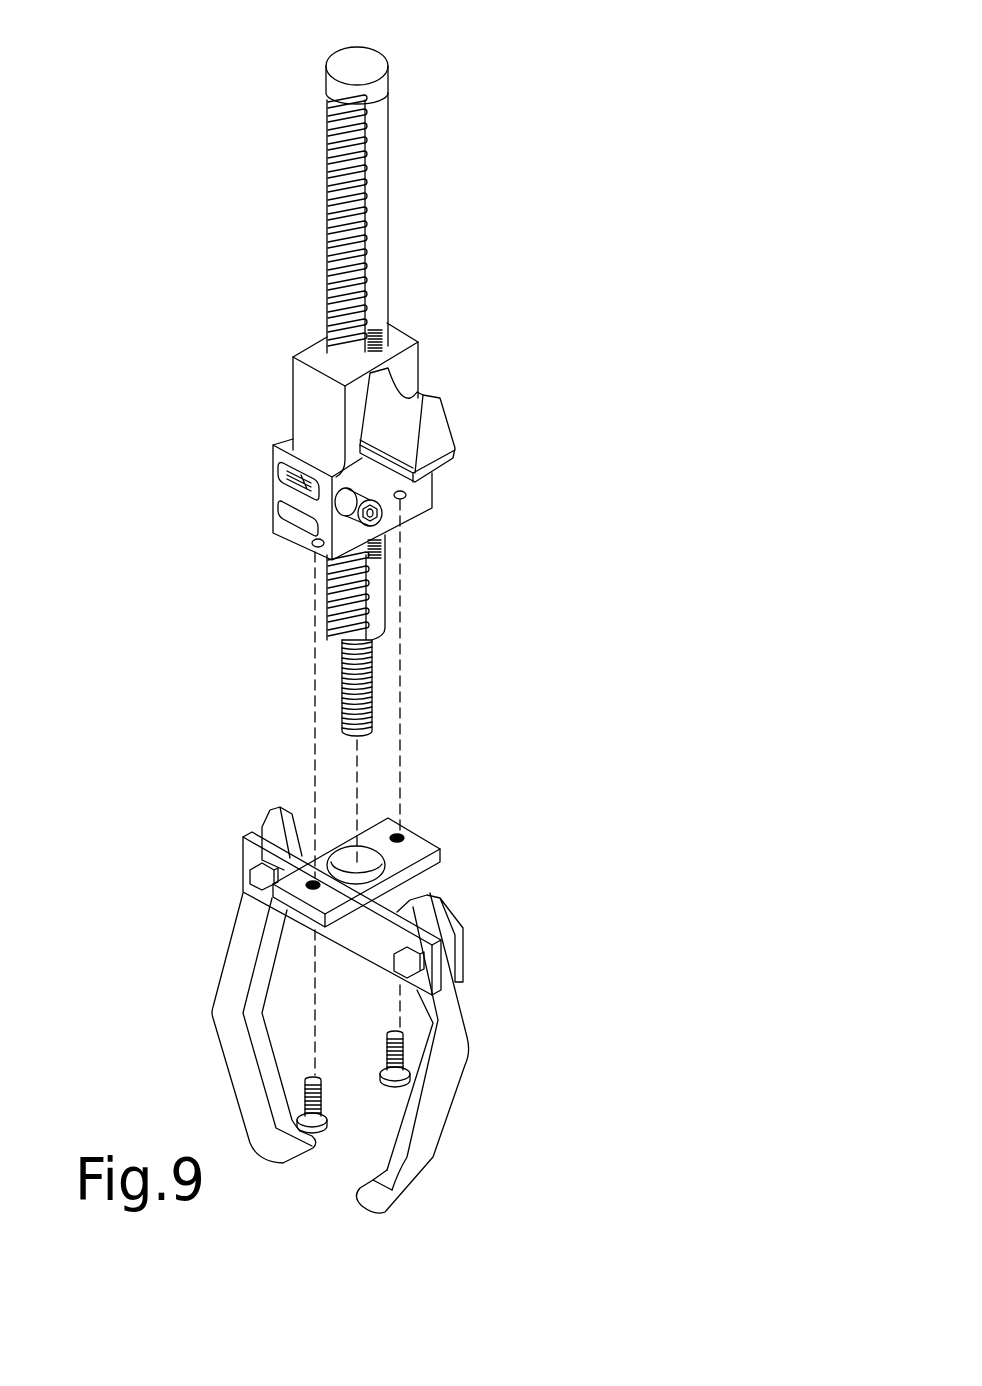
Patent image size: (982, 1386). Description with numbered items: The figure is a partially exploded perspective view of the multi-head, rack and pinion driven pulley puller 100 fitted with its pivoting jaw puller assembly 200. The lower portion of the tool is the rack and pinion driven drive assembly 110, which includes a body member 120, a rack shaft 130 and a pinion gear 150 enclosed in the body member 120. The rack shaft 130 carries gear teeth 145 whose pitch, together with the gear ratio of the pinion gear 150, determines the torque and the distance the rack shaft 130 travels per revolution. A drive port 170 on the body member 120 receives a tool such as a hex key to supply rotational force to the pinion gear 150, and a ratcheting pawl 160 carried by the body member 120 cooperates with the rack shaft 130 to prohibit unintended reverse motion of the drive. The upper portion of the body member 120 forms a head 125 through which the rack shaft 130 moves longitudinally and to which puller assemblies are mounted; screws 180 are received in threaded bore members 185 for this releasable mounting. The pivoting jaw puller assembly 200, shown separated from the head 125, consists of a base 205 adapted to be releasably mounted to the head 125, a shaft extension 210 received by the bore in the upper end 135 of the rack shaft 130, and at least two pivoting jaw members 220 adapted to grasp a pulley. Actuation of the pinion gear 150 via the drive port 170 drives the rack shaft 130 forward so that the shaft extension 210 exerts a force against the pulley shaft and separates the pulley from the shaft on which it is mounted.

The multi-head rack and pinion driven pulley puller 100 is at (606, 179).
The drive assembly 110 is at (300, 353).
The body member 120 is at (302, 430).
The head 125 is at (276, 532).
The rack shaft 130 is at (368, 98).
The upper end 135 is at (330, 598).
The gear teeth 145 is at (336, 166).
The pinion gear 150 is at (292, 477).
The ratcheting pawl 160 is at (405, 495).
The drive port 170 is at (378, 538).
The screws 180 is at (395, 1047).
The threaded bore members 185 is at (308, 543).
The pivoting jaw puller assembly 200 is at (460, 958).
The base 205 is at (396, 902).
The shaft extension 210 is at (345, 678).
The pivoting jaw members 220 is at (428, 1160).